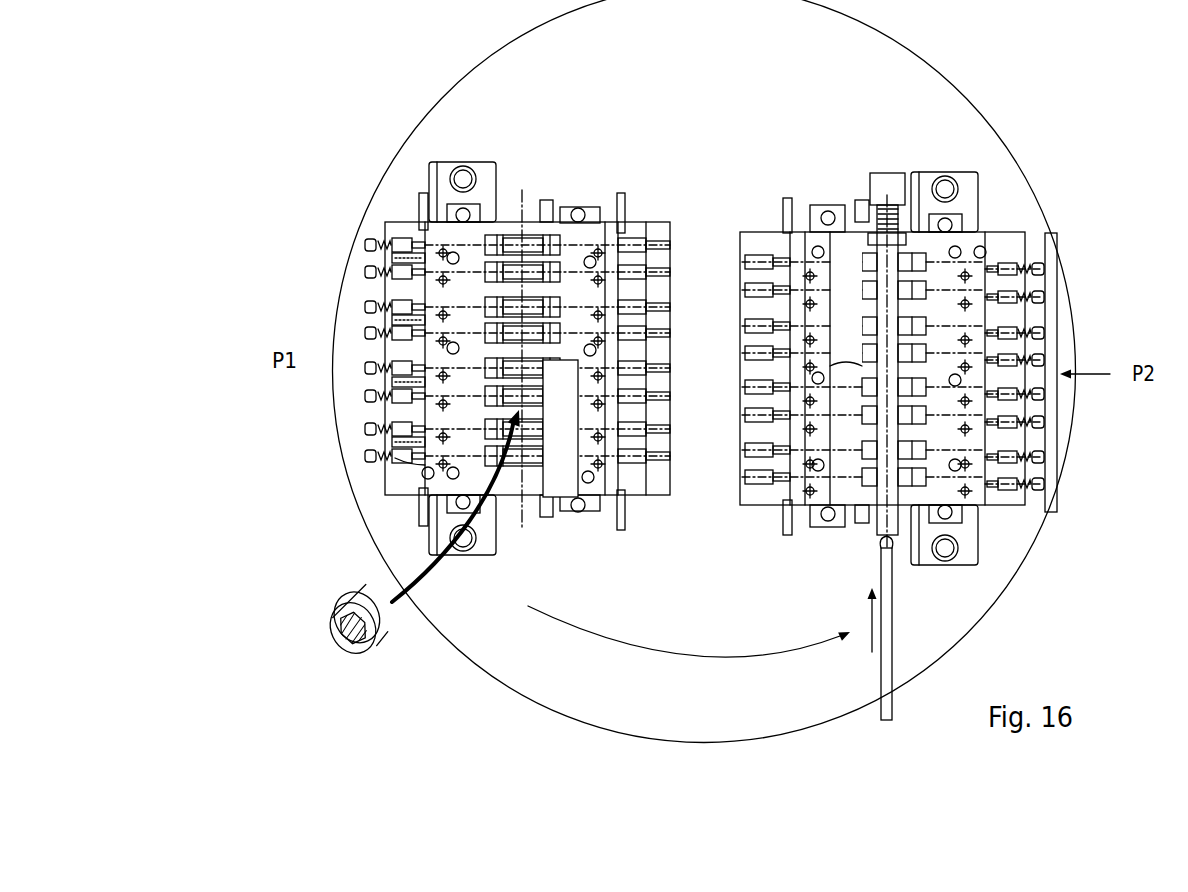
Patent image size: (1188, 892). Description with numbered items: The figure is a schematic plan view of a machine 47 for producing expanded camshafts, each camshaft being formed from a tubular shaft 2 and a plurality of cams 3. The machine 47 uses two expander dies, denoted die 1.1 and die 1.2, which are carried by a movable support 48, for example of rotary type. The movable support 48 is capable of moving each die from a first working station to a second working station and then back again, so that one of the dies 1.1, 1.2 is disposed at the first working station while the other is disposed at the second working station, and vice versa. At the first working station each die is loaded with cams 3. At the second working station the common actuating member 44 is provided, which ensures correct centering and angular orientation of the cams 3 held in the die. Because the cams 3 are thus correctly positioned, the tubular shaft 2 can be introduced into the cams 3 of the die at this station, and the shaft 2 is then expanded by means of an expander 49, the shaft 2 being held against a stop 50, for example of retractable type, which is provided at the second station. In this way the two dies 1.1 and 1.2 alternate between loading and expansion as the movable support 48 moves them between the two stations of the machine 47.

The die 1.1 is at (546, 170).
The die 1.2 is at (892, 152).
The tubular shaft 2 is at (877, 532).
The cams 3 is at (550, 334).
The common actuating member 44 is at (1055, 316).
The machine 47 is at (346, 148).
The movable support 48 is at (835, 26).
The expander 49 is at (891, 612).
The stop 50 is at (870, 183).